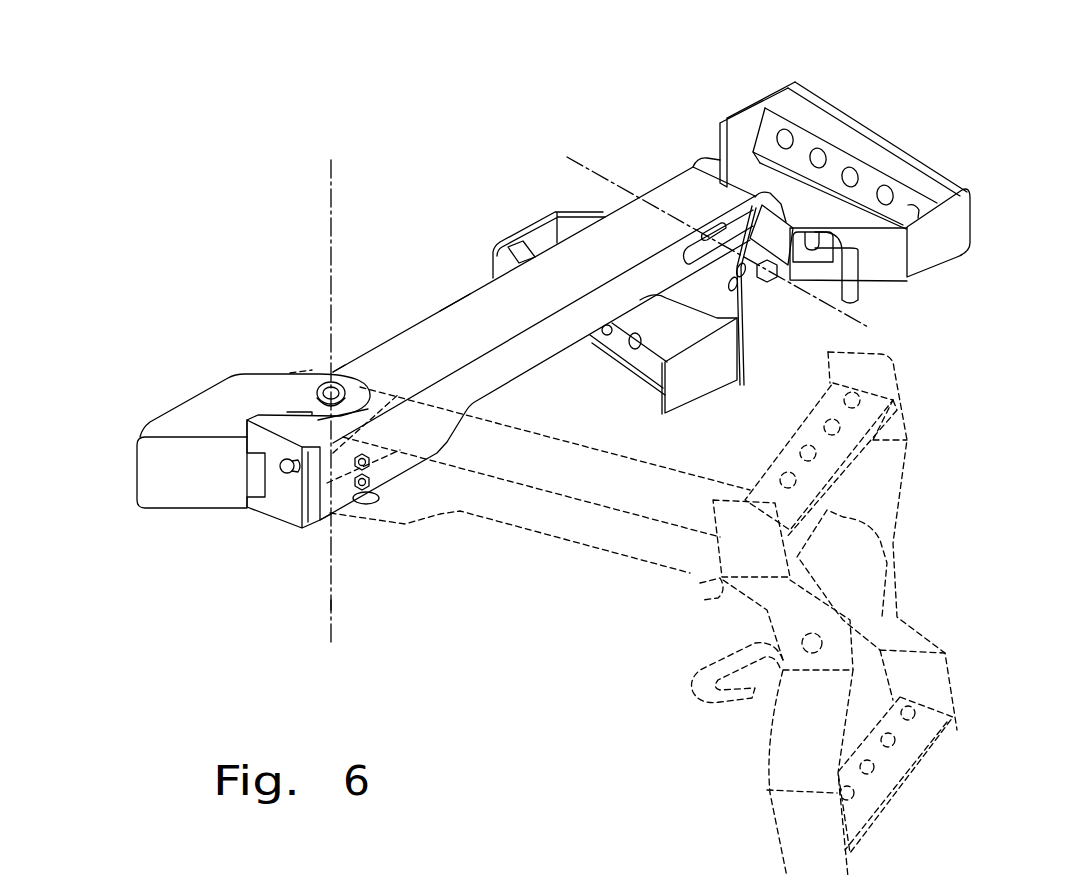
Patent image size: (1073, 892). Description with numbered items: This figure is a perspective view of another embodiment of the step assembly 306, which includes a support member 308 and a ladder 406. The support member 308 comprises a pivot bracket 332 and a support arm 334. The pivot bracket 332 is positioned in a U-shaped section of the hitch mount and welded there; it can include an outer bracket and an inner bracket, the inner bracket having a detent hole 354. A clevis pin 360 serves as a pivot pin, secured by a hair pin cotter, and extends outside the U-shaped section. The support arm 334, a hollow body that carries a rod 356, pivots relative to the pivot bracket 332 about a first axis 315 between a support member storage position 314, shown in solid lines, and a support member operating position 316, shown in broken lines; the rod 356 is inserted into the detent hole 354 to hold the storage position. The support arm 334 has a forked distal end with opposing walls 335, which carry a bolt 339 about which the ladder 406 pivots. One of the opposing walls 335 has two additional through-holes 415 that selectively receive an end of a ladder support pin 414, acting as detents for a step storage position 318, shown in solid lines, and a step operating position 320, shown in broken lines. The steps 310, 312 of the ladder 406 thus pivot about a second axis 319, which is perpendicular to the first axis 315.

The step assembly 306 is at (559, 710).
The support member 308 is at (412, 306).
The step 310 is at (893, 170).
The step 312 is at (633, 368).
The support member storage position 314 is at (350, 307).
The first axis 315 is at (331, 193).
The support member operating position 316 is at (577, 568).
The step storage position 318 is at (858, 121).
The second axis 319 is at (592, 162).
The step operating position 320 is at (939, 787).
The pivot bracket 332 is at (198, 402).
The support arm 334 is at (457, 318).
The opposing walls 335 is at (744, 345).
The bolt 339 is at (776, 278).
The detent hole 354 is at (300, 475).
The rod 356 is at (281, 474).
The clevis pin 360 is at (330, 387).
The ladder 406 is at (732, 90).
The ladder support pin 414 is at (860, 293).
The through-holes 415 is at (746, 296).